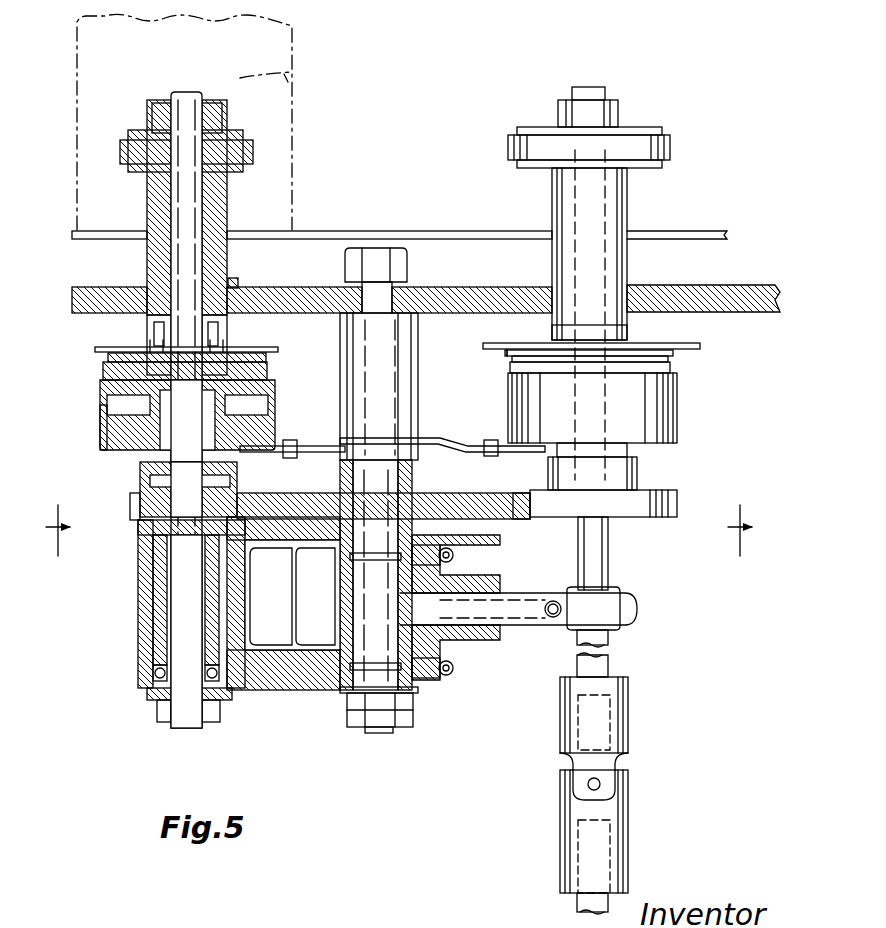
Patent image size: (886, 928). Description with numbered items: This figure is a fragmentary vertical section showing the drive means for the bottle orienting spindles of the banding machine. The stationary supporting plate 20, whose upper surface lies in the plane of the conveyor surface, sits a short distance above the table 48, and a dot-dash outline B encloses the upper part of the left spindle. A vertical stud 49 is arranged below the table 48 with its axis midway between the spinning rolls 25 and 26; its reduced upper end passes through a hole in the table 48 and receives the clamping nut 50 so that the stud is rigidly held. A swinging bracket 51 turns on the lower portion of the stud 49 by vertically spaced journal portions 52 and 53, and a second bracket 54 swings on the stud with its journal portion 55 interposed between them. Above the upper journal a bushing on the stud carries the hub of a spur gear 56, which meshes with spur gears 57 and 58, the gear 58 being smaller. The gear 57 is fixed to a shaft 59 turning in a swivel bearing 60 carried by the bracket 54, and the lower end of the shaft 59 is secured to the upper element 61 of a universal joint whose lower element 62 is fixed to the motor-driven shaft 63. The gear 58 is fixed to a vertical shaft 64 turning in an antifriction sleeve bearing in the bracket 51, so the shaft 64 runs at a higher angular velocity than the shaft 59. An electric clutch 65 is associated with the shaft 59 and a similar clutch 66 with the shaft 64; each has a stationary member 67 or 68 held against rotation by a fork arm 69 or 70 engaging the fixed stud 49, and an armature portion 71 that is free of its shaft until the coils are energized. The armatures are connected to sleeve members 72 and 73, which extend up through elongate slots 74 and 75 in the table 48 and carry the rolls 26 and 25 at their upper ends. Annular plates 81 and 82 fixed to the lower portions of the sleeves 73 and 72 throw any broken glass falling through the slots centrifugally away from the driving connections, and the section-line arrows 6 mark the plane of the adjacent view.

The boundary of section B is at (208, 122).
The stationary plate 20 is at (330, 238).
The bottle spinning roll 25 is at (120, 150).
The bottle spinning roll 26 is at (508, 148).
The table 48 is at (86, 298).
The vertical stud 49 is at (400, 378).
The clamping nut 50 is at (410, 272).
The swinging bracket 51 is at (138, 630).
The journal portion 52 is at (345, 560).
The journal portion 53 is at (347, 690).
The second bracket 54 is at (462, 592).
The journal portion 55 is at (414, 480).
The spur gear 56 is at (468, 506).
The spur gear 57 is at (555, 512).
The spur gear 58 is at (238, 495).
The shaft 59 is at (600, 562).
The swivel bearing 60 is at (618, 594).
The upper element of universal joint 61 is at (620, 740).
The lower element of universal joint 62 is at (625, 815).
The shaft 63 is at (585, 905).
The vertical shaft 64 is at (165, 585).
The electric clutch 65 is at (688, 427).
The electric clutch 66 is at (99, 433).
The stationary member 67 is at (520, 394).
The stationary member 68 is at (270, 425).
The fork arm 69 is at (450, 440).
The fork arm 70 is at (302, 446).
The armature portion 71 is at (108, 357).
The sleeve member 72 is at (625, 232).
The sleeve member 73 is at (228, 276).
The elongate slot 74 is at (630, 290).
The elongate slot 75 is at (235, 290).
The annular plate 81 is at (483, 346).
The annular plate 82 is at (262, 352).
The section line 6 is at (399, 517).